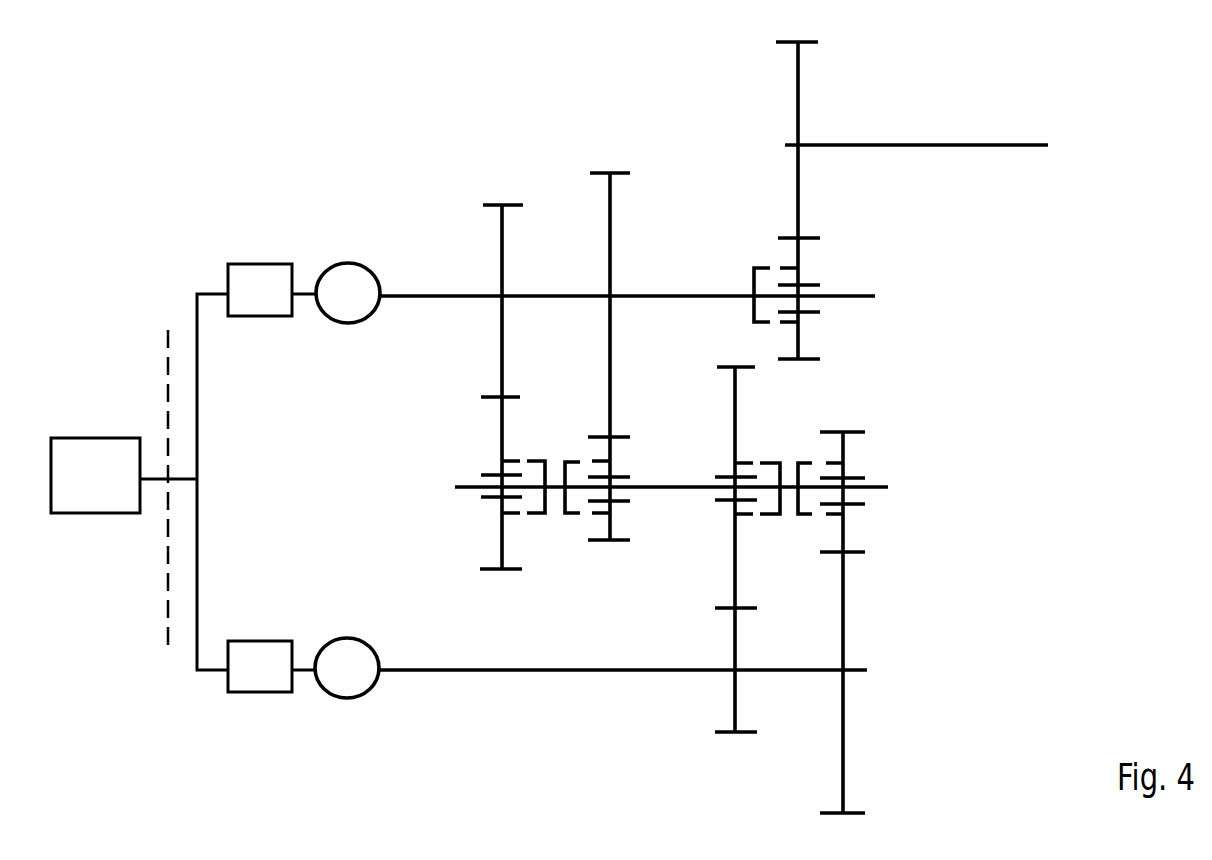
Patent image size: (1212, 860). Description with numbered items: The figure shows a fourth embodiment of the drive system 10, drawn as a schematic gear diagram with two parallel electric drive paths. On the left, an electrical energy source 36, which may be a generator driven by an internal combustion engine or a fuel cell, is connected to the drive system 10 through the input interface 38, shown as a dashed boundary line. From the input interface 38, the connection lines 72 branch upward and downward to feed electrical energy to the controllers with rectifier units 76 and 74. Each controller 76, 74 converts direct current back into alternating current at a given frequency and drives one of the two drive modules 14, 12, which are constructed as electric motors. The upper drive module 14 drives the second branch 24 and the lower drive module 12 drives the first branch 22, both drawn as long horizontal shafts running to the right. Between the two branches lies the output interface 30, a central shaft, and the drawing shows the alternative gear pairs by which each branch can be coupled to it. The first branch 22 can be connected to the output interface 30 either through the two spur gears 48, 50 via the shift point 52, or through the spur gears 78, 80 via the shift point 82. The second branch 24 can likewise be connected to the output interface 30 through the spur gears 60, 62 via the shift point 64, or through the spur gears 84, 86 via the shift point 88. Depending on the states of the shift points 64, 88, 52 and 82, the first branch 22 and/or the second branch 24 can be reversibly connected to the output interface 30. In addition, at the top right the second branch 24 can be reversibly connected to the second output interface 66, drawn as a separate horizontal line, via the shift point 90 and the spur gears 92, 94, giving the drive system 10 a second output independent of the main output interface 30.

The drive system 10 is at (550, 170).
The drive module 12 is at (345, 670).
The drive module 14 is at (340, 288).
The first branch 22 is at (552, 673).
The second branch 24 is at (430, 295).
The output interface 30 is at (875, 485).
The electrical energy source 36 is at (95, 475).
The input interface 38 is at (167, 377).
The spur gear 48 is at (735, 642).
The spur gear 50 is at (735, 543).
The shift point 52 is at (780, 462).
The spur gear 60 is at (502, 262).
The spur gear 62 is at (500, 433).
The shift point 64 is at (543, 460).
The second output interface 66 is at (1032, 140).
The connection lines 72 is at (197, 408).
The controller with rectifier unit 74 is at (260, 668).
The controller with rectifier unit 76 is at (258, 290).
The spur gear 78 is at (845, 752).
The spur gear 80 is at (845, 533).
The shift point 82 is at (813, 515).
The spur gear 84 is at (610, 230).
The spur gear 86 is at (610, 447).
The shift point 88 is at (566, 513).
The shift point 90 is at (755, 268).
The spur gear 92 is at (800, 253).
The spur gear 94 is at (795, 108).